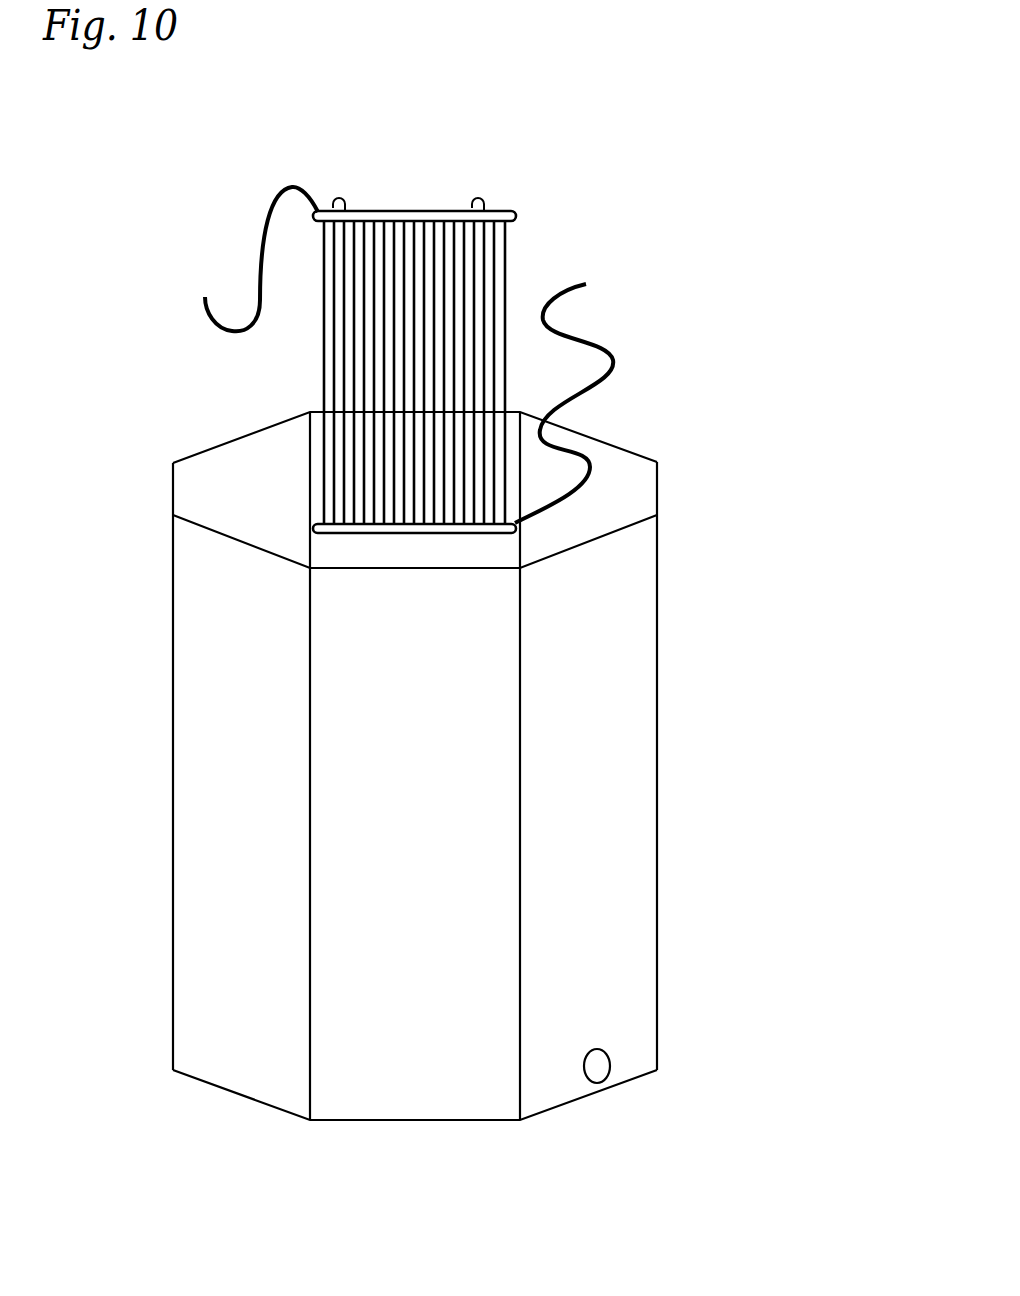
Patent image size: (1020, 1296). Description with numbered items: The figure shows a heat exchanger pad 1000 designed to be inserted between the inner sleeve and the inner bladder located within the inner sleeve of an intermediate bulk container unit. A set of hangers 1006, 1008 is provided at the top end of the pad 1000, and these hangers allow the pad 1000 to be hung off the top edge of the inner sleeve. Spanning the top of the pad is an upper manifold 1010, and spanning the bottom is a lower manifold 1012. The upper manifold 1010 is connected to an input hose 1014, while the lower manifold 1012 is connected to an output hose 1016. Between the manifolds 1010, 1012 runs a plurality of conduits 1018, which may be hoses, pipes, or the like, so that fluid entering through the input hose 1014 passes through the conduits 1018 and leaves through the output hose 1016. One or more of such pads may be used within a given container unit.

The heat exchanger pad 1000 is at (703, 228).
The hanger 1006 is at (338, 194).
The hanger 1008 is at (480, 198).
The upper manifold 1010 is at (514, 216).
The lower manifold 1012 is at (487, 533).
The input hose 1014 is at (258, 258).
The output hose 1016 is at (576, 290).
The conduits 1018 is at (506, 268).